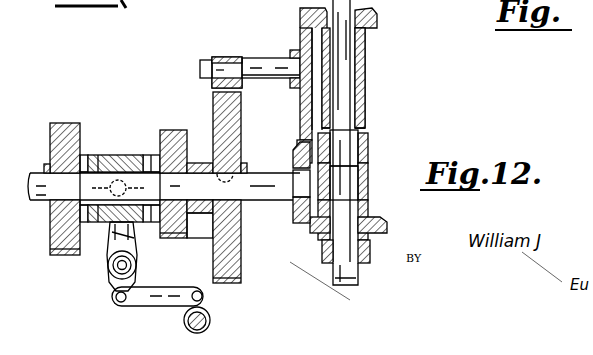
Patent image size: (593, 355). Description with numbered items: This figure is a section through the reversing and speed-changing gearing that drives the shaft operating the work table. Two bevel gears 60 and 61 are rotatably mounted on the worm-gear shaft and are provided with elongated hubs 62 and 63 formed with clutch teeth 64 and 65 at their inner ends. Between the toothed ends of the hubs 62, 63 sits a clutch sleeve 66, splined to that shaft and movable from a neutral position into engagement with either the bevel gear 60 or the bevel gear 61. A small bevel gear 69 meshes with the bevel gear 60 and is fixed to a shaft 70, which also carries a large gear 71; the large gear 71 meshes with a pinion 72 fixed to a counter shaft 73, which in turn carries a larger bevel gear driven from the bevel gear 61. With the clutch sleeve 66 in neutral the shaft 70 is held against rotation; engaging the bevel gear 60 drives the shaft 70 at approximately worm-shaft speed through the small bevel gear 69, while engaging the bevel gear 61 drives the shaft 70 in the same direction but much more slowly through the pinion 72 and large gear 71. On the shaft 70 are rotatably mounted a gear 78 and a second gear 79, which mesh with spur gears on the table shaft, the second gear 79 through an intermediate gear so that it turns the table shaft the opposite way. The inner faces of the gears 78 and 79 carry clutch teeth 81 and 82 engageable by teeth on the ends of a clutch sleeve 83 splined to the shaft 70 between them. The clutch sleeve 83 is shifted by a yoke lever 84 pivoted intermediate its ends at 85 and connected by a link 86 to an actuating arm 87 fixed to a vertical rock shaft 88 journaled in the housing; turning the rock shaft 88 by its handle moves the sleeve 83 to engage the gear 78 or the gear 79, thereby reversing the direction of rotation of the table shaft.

The bevel gear 60 is at (384, 228).
The bevel gear 61 is at (375, 18).
The elongated hub 62 is at (375, 205).
The elongated hub 63 is at (365, 84).
The clutch teeth 64 is at (370, 186).
The clutch teeth 65 is at (368, 124).
The clutch sleeve 66 is at (370, 148).
The small bevel gear 69 is at (297, 218).
The shaft 70 is at (268, 175).
The large gear 71 is at (240, 130).
The pinion 72 is at (228, 52).
The counter shaft 73 is at (265, 62).
The gear 78 is at (52, 150).
The second gear 79 is at (197, 162).
The clutch teeth 81 is at (86, 155).
The clutch teeth 82 is at (158, 155).
The clutch sleeve 83 is at (110, 160).
The yoke lever 84 is at (110, 254).
The pivot 85 is at (120, 270).
The link 86 is at (145, 299).
The actuating arm 87 is at (204, 303).
The vertical rock shaft 88 is at (210, 322).